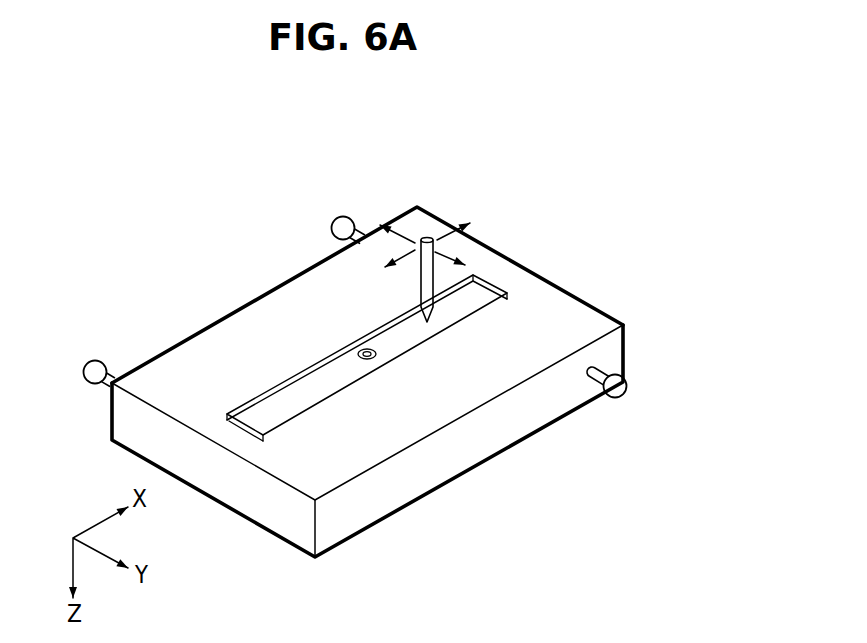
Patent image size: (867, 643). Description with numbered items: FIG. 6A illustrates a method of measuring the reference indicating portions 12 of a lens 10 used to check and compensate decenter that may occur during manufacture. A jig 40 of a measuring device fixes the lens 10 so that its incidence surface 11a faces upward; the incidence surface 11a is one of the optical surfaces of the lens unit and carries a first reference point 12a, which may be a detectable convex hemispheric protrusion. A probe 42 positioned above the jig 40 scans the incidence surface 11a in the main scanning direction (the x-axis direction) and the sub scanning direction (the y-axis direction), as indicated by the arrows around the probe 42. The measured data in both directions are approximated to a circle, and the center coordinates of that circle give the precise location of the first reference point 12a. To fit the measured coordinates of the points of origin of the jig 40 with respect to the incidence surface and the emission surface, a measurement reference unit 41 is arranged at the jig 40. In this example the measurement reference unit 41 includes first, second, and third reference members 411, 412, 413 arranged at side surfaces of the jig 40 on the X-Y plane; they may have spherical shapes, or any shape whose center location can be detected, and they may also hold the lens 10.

The lens 10 is at (133, 178).
The incidence surface 11a is at (288, 398).
The reference indicating portions 12 is at (228, 228).
The first reference point 12a is at (360, 349).
The jig 40 is at (600, 302).
The measurement reference unit 41 is at (693, 448).
The first reference member 411 is at (92, 366).
The second reference member 412 is at (337, 219).
The third reference member 413 is at (621, 393).
The probe 42 is at (427, 238).